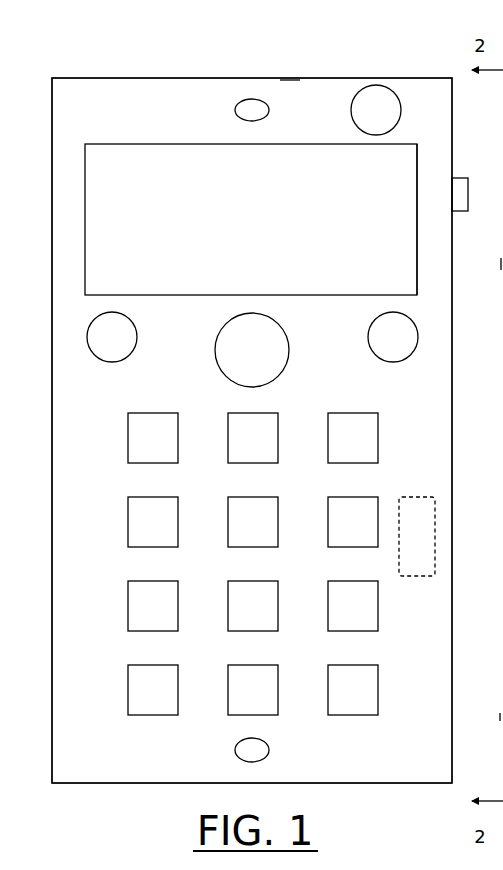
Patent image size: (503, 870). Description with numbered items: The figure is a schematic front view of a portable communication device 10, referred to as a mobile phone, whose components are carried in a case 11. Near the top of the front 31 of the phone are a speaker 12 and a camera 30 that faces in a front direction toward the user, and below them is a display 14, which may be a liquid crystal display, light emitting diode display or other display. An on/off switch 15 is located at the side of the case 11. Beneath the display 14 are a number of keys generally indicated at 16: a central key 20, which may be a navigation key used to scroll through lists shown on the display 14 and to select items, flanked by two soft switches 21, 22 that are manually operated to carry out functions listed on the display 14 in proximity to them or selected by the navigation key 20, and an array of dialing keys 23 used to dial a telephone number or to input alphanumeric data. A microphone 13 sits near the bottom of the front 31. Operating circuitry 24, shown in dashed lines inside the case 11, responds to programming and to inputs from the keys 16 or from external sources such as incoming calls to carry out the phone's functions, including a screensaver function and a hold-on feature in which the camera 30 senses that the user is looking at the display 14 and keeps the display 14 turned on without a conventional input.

The portable communication device 10 is at (76, 47).
The case 11 is at (176, 77).
The speaker 12 is at (251, 99).
The front 31 is at (290, 95).
The camera 30 is at (362, 85).
The display 14 is at (404, 160).
The on/off switch 15 is at (462, 210).
The keys 16 is at (428, 295).
The navigation key 20 is at (288, 351).
The soft switch 21 is at (136, 325).
The soft switch 22 is at (378, 316).
The dialing keys 23 is at (398, 407).
The operating circuitry 24 is at (418, 497).
The microphone 13 is at (269, 748).